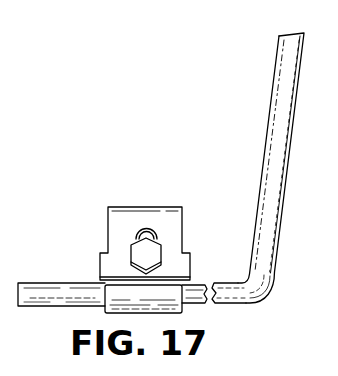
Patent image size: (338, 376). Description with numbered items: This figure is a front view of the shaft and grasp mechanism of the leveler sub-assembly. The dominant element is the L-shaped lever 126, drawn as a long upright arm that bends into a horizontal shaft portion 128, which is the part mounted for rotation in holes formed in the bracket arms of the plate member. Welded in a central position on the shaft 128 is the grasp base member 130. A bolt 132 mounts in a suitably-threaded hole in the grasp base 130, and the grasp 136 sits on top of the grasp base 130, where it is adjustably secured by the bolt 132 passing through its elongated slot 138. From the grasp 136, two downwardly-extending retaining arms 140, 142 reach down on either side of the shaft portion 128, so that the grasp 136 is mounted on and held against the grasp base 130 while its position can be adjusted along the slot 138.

The L-shaped lever 126 is at (282, 47).
The shaft portion 128 is at (45, 296).
The grasp base member 130 is at (184, 311).
The bolt 132 is at (152, 250).
The grasp 136 is at (148, 206).
The elongated slot 138 is at (134, 238).
The retaining arm 140 is at (98, 291).
The retaining arm 142 is at (197, 287).